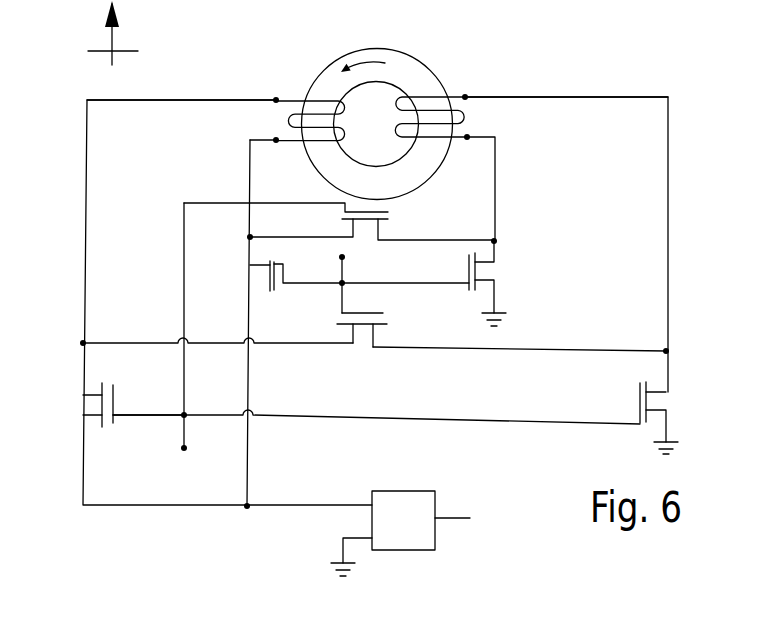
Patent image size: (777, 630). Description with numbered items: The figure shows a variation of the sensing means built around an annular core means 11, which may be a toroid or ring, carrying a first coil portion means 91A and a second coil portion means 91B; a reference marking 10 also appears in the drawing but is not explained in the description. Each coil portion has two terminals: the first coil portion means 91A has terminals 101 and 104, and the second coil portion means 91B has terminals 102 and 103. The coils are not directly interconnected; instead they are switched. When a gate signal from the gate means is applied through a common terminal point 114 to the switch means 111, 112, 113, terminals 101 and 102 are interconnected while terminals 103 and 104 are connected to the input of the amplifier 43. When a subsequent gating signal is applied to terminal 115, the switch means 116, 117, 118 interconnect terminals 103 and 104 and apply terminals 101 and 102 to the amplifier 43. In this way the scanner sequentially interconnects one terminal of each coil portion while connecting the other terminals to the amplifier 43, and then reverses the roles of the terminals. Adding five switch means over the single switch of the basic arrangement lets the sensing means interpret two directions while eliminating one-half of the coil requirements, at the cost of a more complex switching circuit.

The magnetic north reference arrow 10 is at (110, 32).
The annular core means 11 is at (420, 63).
The first coil portion means 91A is at (455, 93).
The second coil portion means 91B is at (322, 112).
The first terminal of first coil portion means 101 is at (468, 136).
The first terminal of second coil portion means 102 is at (276, 139).
The second terminal of second coil portion means 103 is at (276, 99).
The second terminal of first coil portion means 104 is at (466, 95).
The switch means 111 is at (370, 221).
The switch means 112 is at (655, 408).
The switch means 113 is at (83, 415).
The common terminal point 114 is at (184, 449).
The terminal 115 is at (340, 257).
The switch means 116 is at (362, 326).
The switch means 117 is at (490, 280).
The switch means 118 is at (268, 275).
The amplifier 43 is at (403, 491).